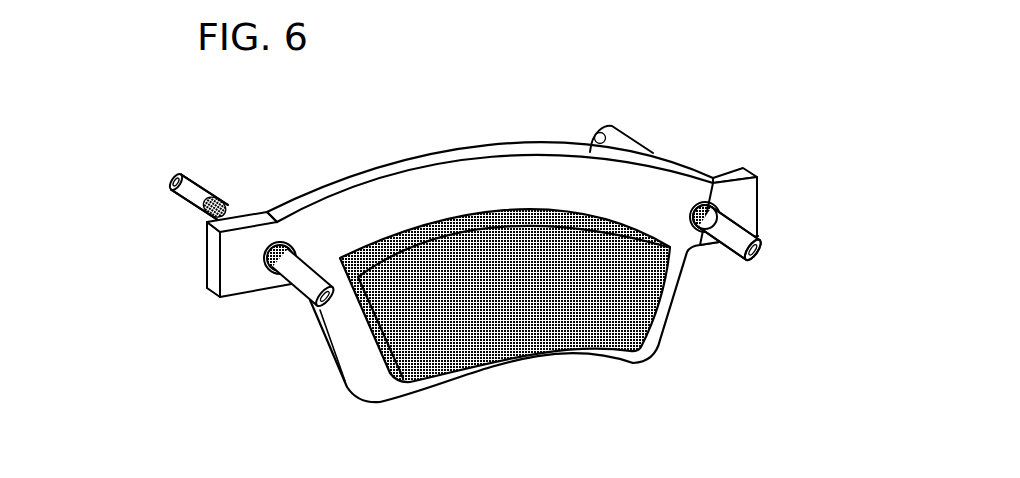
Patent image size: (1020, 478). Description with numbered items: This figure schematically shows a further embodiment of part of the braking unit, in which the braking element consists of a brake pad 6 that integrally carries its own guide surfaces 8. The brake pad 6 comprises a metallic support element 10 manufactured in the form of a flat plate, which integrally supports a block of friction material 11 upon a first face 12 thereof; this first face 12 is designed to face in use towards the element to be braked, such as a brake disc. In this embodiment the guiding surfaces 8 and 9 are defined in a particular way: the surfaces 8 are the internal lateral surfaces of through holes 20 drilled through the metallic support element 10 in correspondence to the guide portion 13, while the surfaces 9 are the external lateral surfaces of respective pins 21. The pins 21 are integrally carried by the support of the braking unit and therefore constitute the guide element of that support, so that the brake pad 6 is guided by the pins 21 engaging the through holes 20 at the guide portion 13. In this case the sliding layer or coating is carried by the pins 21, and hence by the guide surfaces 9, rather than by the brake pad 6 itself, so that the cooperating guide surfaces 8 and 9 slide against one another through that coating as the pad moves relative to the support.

The brake pad 6 is at (534, 263).
The guide surface 8 is at (285, 269).
The guide surface 9 is at (205, 156).
The metallic support element 10 is at (379, 173).
The block of friction material 11 is at (525, 351).
The first face 12 is at (452, 192).
The guide portion 13 is at (233, 260).
The through hole 20 is at (258, 276).
The pin 21 is at (191, 193).